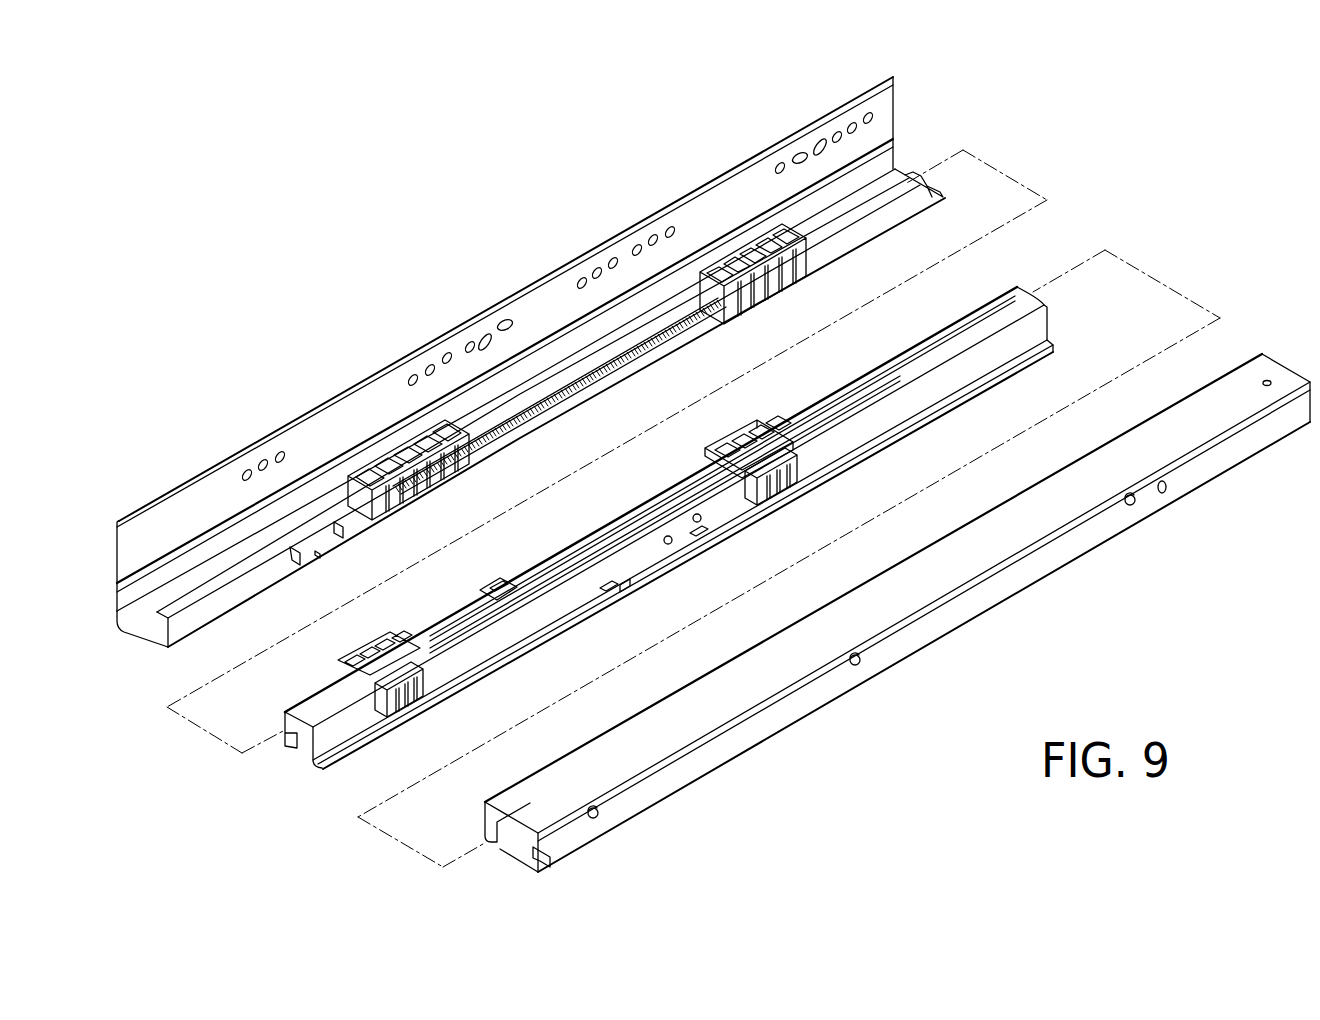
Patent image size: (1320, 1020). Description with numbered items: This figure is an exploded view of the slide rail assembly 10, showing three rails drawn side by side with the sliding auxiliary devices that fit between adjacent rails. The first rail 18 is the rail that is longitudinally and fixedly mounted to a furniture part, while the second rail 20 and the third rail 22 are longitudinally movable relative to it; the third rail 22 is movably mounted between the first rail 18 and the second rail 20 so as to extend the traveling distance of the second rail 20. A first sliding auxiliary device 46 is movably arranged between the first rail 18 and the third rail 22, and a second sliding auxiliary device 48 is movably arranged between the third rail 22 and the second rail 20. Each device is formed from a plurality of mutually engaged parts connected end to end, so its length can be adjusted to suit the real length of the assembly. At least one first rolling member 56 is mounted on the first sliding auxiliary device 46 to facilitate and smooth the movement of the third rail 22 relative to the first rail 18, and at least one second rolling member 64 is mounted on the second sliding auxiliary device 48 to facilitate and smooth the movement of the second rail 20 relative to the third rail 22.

The slide rail assembly 10 is at (440, 258).
The first rail 18 is at (255, 560).
The second rail 20 is at (768, 667).
The third rail 22 is at (318, 690).
The first sliding auxiliary device 46 is at (715, 270).
The second sliding auxiliary device 48 is at (762, 416).
The first rolling member 56 is at (405, 455).
The second rolling member 64 is at (790, 492).